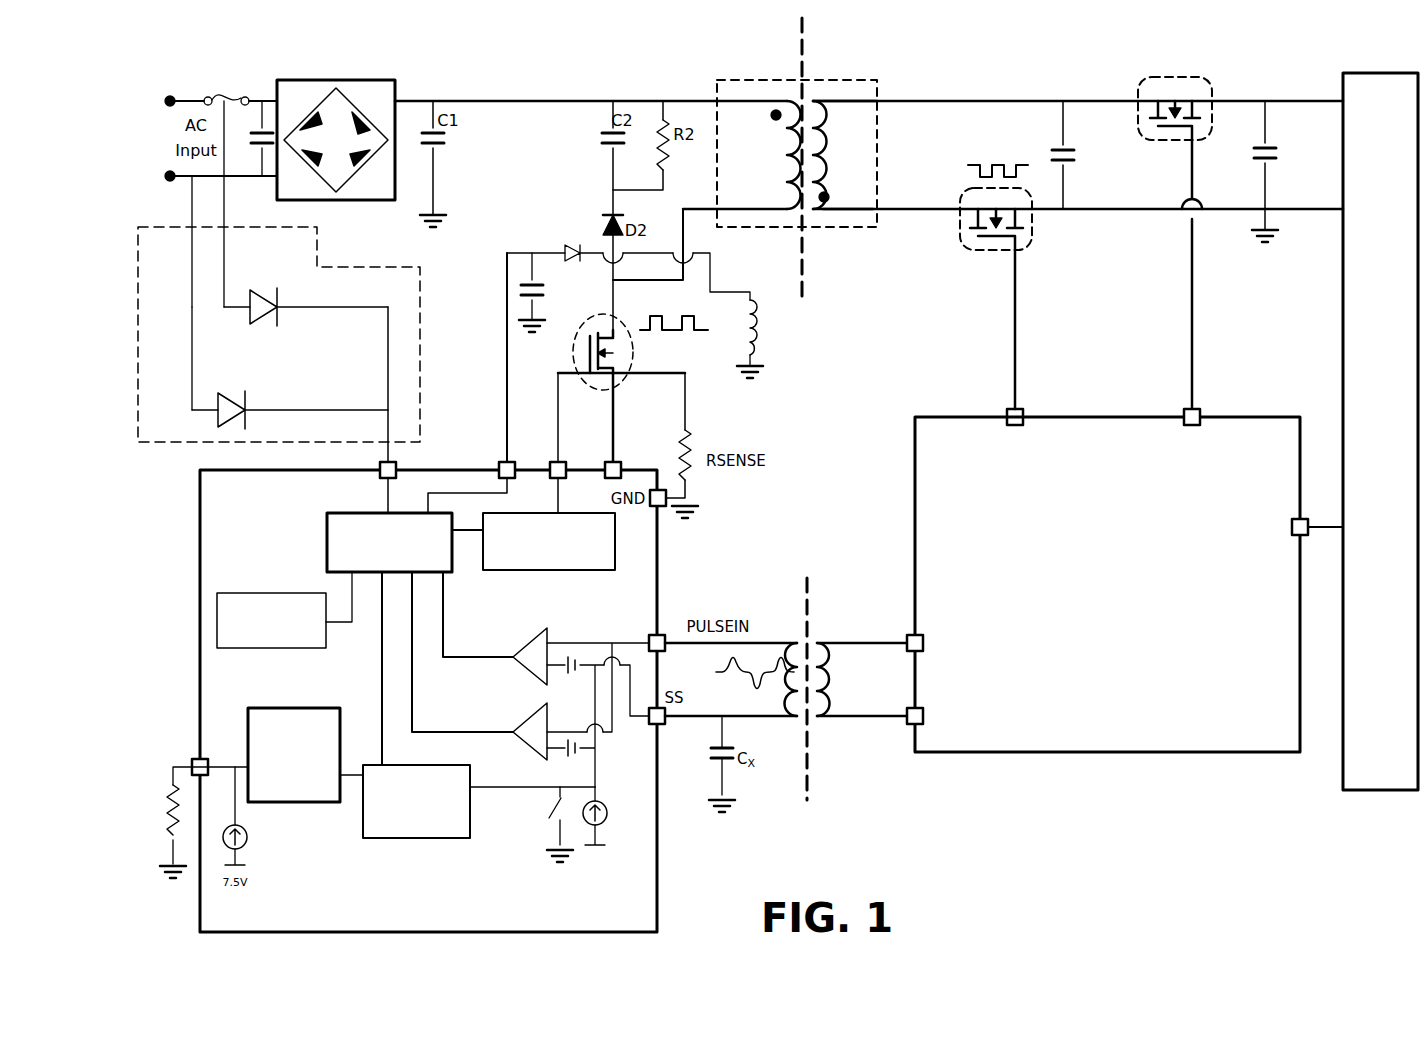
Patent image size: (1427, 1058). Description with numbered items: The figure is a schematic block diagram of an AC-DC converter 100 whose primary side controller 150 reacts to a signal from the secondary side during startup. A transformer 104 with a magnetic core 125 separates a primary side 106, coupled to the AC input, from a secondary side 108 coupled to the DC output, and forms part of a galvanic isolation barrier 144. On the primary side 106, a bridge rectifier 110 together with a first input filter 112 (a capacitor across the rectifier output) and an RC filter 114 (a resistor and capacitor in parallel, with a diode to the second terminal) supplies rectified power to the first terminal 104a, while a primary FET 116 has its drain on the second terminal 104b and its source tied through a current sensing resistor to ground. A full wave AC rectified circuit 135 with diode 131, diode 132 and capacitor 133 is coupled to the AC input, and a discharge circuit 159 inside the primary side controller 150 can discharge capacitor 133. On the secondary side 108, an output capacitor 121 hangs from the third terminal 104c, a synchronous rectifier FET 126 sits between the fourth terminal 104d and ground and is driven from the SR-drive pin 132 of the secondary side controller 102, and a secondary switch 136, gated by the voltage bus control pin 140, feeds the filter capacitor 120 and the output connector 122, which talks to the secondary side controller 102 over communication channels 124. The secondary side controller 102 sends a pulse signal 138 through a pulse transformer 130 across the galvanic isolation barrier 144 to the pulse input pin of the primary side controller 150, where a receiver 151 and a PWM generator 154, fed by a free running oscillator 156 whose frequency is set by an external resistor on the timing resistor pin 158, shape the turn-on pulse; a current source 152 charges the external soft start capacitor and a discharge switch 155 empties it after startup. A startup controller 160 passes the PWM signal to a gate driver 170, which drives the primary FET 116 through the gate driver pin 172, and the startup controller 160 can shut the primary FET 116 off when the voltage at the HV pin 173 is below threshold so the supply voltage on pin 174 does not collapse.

The AC-DC converter 100 is at (1176, 845).
The secondary side controller 102 is at (1103, 584).
The transformer 104 is at (806, 143).
The first terminal 104a is at (748, 97).
The second terminal 104b is at (735, 228).
The third terminal 104c is at (852, 95).
The fourth terminal 104d is at (864, 204).
The primary side 106 is at (552, 54).
The secondary side 108 is at (990, 55).
The bridge rectifier 110 is at (343, 80).
The first input filter 112 is at (428, 88).
The RC filter 114 is at (647, 88).
The primary FET 116 is at (639, 350).
The filter capacitor 120 is at (1254, 157).
The output capacitor 121 is at (1060, 154).
The output connector 122 is at (1363, 431).
The communication channels 124 is at (1314, 435).
The magnetic core 125 is at (828, 206).
The synchronous rectifier FET 126 is at (962, 250).
The pulse transformer 130 is at (832, 694).
The diode 131 is at (263, 288).
The diode / SR-drive pin 132 is at (228, 393).
The capacitor 133 is at (262, 118).
The full wave AC rectified circuit 135 is at (566, 318).
The secondary switch 136 is at (1192, 78).
The pulse signal 138 is at (747, 679).
The voltage bus control pin 140 is at (1184, 411).
The galvanic isolation barrier 144 is at (810, 284).
The primary side controller 150 is at (428, 701).
The receiver 151 is at (600, 629).
The current source 152 is at (608, 822).
The PWM generator 154 is at (363, 829).
The discharge switch 155 is at (560, 809).
The free running oscillator 156 is at (285, 708).
The timing resistor pin 158 is at (195, 765).
The discharge circuit 159 is at (273, 593).
The startup controller 160 is at (327, 551).
The gate driver 170 is at (549, 541).
The gate driver pin 172 is at (563, 464).
The HV pin 173 is at (392, 462).
The supply voltage pin 174 is at (511, 464).